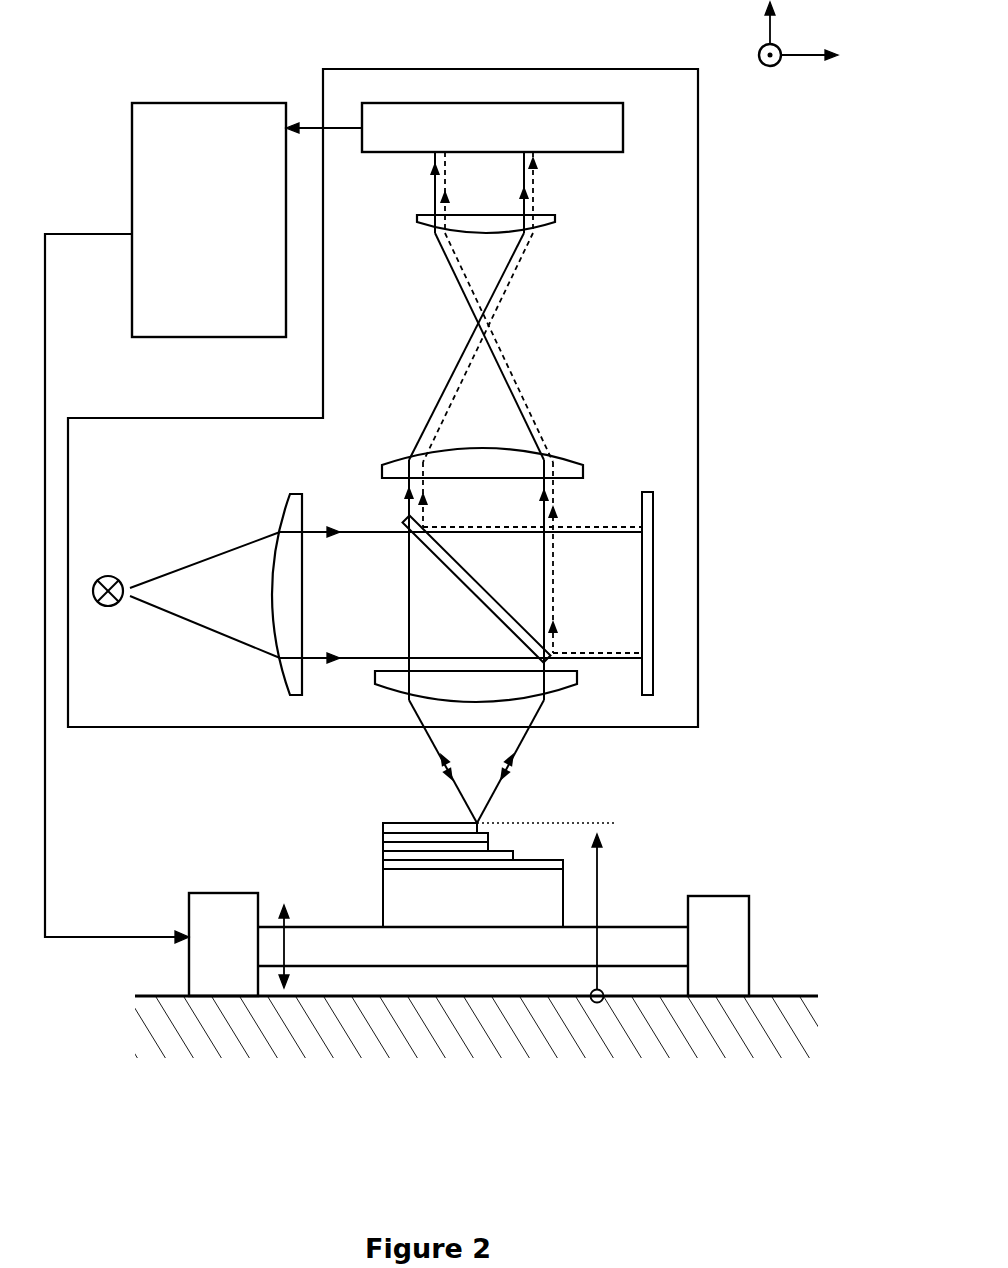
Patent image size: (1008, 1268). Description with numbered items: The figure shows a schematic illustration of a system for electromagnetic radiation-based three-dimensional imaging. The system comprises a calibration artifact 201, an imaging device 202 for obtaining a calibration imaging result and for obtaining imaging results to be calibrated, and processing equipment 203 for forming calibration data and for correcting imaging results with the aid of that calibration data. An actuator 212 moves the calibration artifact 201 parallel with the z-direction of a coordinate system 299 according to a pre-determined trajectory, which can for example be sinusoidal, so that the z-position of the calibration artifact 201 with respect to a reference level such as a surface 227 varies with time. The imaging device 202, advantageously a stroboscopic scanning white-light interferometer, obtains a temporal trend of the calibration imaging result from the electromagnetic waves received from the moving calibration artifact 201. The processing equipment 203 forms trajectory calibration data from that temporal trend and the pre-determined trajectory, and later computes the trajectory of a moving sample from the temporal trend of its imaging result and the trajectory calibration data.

The imaging device 202 is at (698, 382).
The processing equipment 203 is at (165, 523).
The calibration artifact 201 is at (650, 820).
The actuator 212 is at (749, 935).
The surface 227 is at (777, 995).
The coordinate system 299 is at (802, 45).